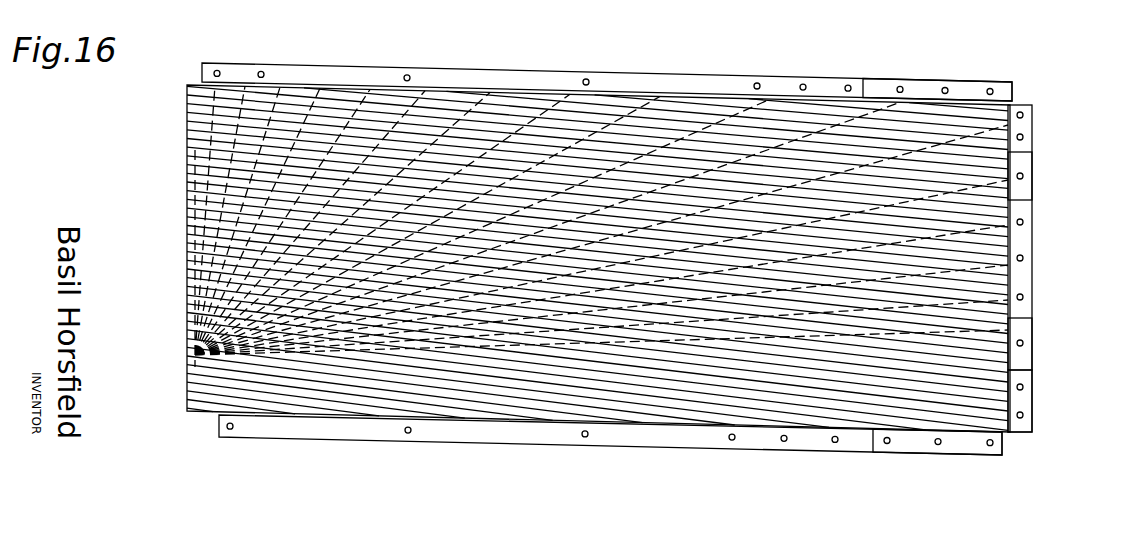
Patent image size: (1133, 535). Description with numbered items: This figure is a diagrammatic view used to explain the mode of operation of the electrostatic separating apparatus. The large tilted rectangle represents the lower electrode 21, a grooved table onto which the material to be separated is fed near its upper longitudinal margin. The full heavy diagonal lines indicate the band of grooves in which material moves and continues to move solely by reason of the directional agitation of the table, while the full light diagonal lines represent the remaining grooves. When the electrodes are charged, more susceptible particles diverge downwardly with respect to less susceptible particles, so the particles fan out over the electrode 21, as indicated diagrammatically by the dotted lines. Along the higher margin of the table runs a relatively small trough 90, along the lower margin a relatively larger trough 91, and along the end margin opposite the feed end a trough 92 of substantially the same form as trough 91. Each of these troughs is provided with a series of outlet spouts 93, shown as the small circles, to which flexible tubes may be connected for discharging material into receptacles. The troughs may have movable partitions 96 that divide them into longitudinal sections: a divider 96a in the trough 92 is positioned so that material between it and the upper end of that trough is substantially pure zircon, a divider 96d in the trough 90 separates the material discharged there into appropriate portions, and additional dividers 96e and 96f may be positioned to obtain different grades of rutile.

The lower electrode 21 is at (512, 116).
The trough 90 is at (657, 447).
The trough 91 is at (657, 78).
The trough 92 is at (1030, 432).
The outlet spouts 93 is at (261, 71).
The movable partitions 96 is at (1024, 378).
The divider 96a is at (1024, 320).
The divider 96d is at (870, 442).
The divider 96e is at (1026, 156).
The divider 96f is at (865, 91).